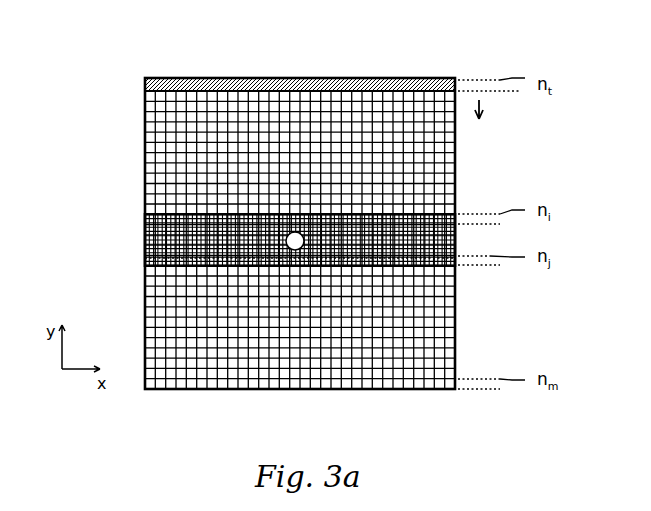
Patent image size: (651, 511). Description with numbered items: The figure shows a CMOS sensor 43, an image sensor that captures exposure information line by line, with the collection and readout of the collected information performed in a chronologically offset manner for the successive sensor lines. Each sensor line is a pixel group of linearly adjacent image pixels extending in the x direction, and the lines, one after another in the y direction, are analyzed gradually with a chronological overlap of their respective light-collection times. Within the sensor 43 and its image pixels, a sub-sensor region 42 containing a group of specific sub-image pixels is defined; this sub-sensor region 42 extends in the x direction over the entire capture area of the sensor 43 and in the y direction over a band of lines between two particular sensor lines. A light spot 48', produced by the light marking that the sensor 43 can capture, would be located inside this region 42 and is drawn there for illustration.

The CMOS sensor 43 is at (323, 52).
The sub-sensor region 42 is at (145, 222).
The light spot 48' is at (252, 263).